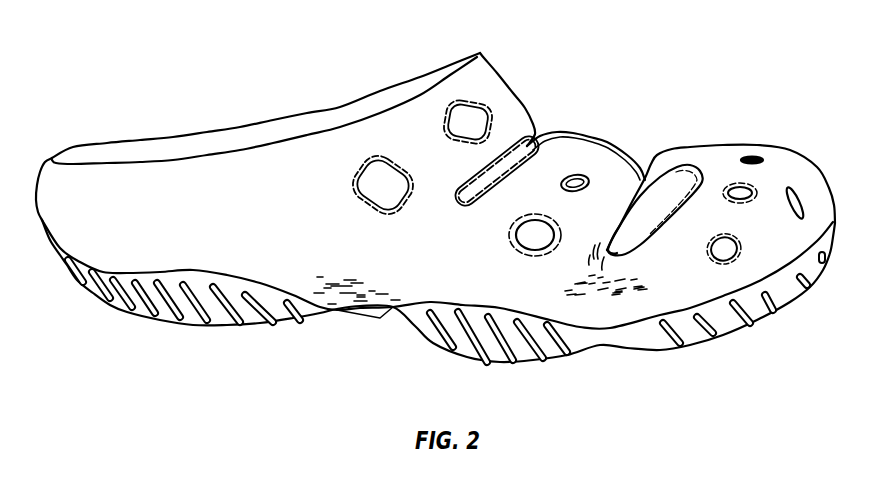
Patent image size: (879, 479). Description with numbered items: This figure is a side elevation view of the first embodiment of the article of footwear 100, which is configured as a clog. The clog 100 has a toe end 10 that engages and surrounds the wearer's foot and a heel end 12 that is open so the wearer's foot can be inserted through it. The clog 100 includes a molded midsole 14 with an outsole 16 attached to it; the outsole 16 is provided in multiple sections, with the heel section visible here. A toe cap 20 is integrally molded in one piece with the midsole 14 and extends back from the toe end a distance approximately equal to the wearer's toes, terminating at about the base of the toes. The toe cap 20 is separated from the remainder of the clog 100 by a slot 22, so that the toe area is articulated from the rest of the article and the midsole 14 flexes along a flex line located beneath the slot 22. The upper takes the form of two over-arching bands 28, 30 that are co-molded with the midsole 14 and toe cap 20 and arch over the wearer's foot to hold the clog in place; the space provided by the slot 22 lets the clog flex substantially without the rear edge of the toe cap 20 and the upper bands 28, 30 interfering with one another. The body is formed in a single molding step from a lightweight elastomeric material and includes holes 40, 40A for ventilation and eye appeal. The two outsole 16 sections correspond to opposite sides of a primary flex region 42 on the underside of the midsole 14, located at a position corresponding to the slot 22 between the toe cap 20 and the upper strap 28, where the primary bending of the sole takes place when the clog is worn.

The article of footwear 100 is at (642, 124).
The toe end 10 is at (814, 282).
The heel end 12 is at (118, 108).
The midsole 14 is at (305, 273).
The outsole 16 is at (537, 353).
The toe cap 20 is at (753, 150).
The slot 22 is at (677, 173).
The upper band 28 is at (553, 152).
The upper band 30 is at (487, 80).
The hole 40 is at (730, 263).
The hole 40A is at (387, 183).
The primary flex region 42 is at (622, 337).